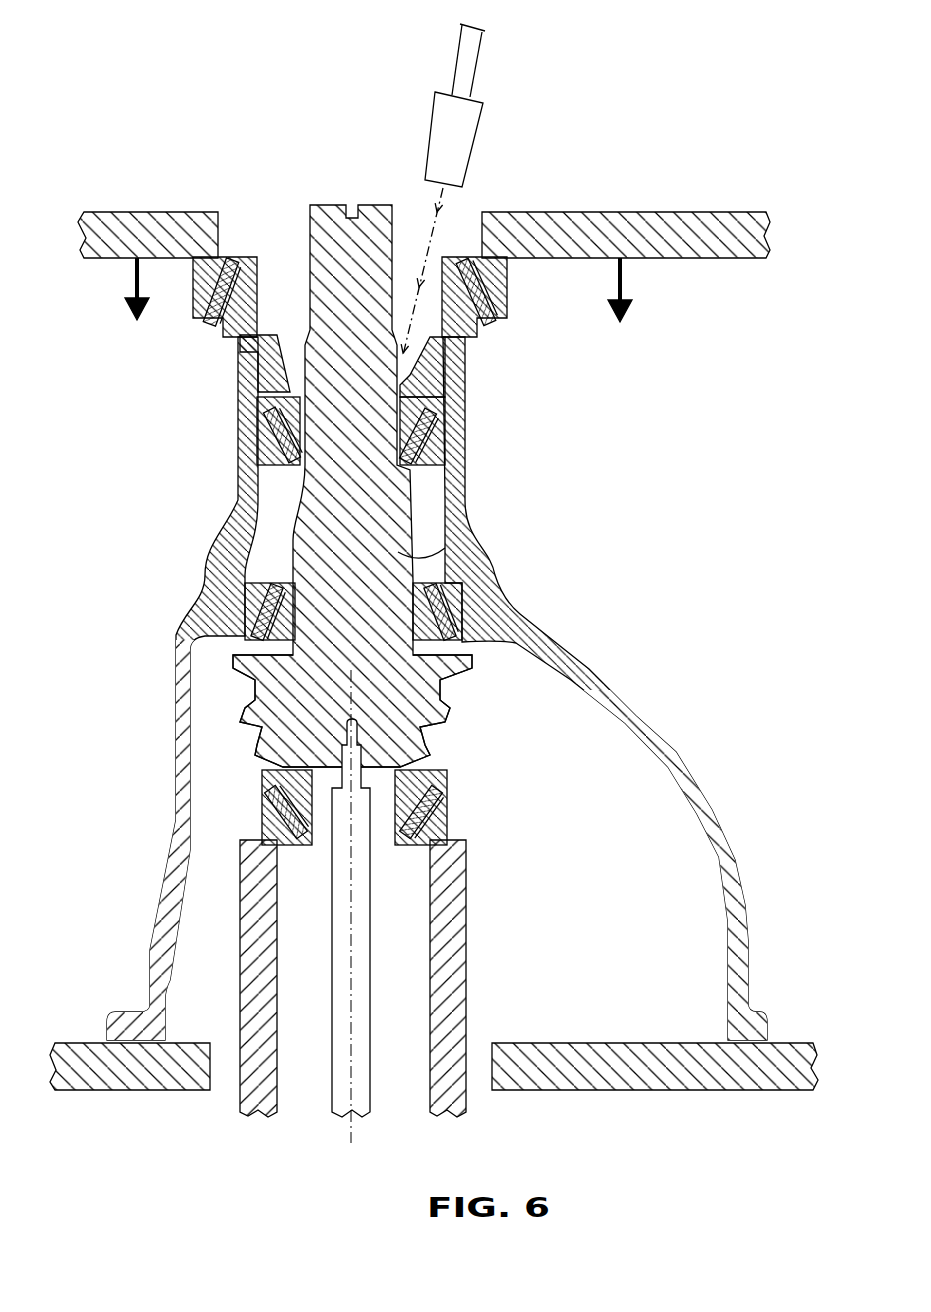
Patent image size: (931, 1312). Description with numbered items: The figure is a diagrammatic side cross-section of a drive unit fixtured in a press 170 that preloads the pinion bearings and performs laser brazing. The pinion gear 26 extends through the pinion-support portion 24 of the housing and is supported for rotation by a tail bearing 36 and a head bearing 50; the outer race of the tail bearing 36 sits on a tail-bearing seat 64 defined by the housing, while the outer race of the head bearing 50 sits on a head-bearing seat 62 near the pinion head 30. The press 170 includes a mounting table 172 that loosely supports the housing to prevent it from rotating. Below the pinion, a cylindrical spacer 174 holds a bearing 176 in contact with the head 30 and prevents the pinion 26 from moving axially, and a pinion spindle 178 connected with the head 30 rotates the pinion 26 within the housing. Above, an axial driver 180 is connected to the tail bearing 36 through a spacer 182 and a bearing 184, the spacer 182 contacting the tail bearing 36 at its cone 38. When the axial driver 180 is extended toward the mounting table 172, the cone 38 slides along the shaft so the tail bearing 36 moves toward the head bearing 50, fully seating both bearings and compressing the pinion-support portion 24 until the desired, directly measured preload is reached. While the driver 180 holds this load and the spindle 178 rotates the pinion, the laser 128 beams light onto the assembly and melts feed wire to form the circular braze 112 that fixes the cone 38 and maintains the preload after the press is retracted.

The press 170 is at (218, 55).
The laser 128 is at (480, 147).
The axial driver 180 is at (672, 212).
The braze 112 is at (305, 390).
The bearing 184 is at (507, 312).
The cone 38 is at (257, 400).
The spacer 182 is at (447, 378).
The tail-bearing seat 64 is at (257, 443).
The pinion-support portion 24 is at (463, 503).
The tail bearing 36 is at (214, 447).
The pinion gear 26 is at (443, 537).
The head-bearing seat 62 is at (240, 607).
The head bearing 50 is at (482, 654).
The head 30 is at (287, 750).
The bearing 176 is at (452, 823).
The spacer 174 is at (467, 947).
The pinion spindle 178 is at (333, 1103).
The mounting table 172 is at (605, 1093).